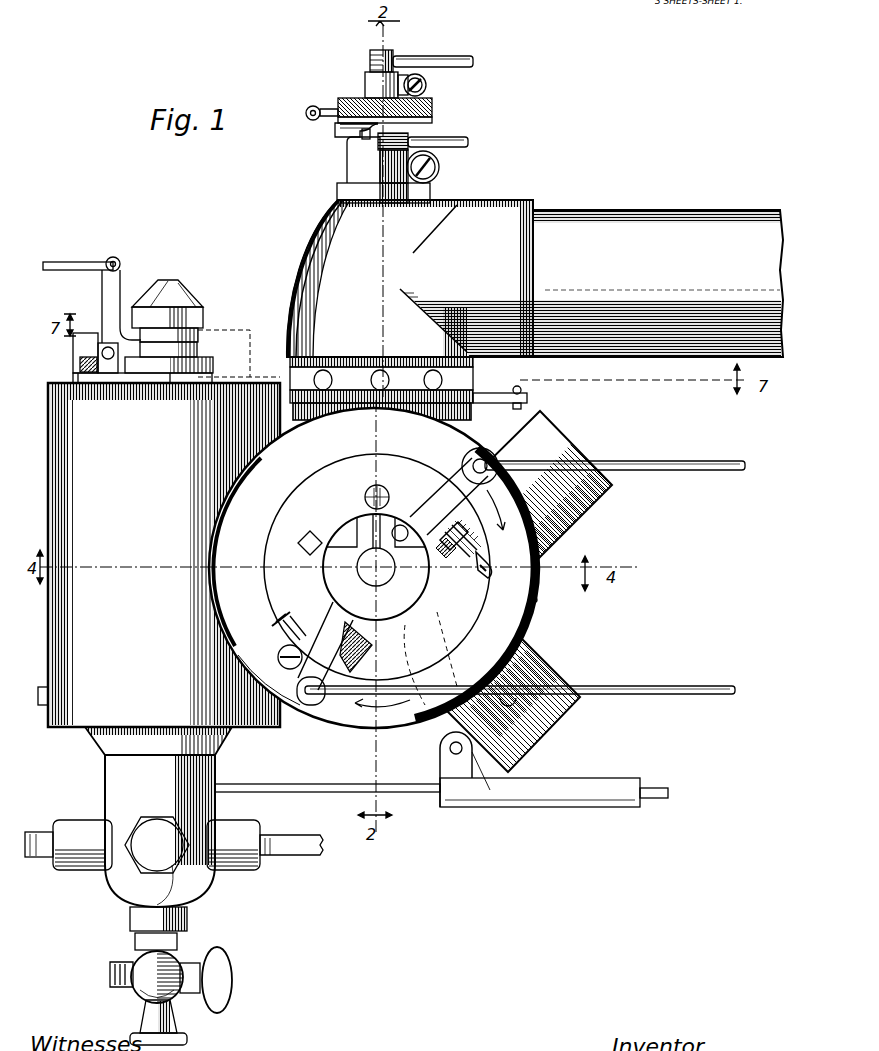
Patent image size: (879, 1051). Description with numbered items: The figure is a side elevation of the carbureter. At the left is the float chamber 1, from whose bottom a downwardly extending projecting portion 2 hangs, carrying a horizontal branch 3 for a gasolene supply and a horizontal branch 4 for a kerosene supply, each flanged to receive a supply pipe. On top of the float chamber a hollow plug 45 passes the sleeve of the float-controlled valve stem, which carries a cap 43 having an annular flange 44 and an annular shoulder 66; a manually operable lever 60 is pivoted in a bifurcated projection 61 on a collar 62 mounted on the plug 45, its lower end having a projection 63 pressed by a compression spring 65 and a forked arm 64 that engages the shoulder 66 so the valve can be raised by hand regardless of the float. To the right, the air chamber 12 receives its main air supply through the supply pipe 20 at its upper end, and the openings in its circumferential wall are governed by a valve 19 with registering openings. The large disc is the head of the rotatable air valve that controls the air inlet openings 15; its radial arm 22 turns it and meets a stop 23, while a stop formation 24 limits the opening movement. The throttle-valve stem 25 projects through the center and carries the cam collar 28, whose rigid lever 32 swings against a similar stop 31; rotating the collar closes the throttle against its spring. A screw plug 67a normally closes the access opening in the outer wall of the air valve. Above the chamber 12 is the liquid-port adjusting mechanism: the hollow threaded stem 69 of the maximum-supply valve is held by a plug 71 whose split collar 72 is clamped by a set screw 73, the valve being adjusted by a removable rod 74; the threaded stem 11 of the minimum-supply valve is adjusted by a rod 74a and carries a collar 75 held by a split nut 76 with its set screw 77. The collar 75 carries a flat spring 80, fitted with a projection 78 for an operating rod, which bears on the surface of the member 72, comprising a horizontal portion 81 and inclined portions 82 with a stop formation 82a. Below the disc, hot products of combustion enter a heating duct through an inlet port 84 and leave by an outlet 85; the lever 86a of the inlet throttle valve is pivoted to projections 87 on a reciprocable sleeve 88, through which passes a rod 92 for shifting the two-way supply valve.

The float chamber 1 is at (159, 555).
The downwardly extending projecting portion 2 is at (122, 777).
The horizontal branch 3 is at (80, 845).
The horizontal branch 4 is at (235, 832).
The valve stem 11 is at (370, 62).
The air chamber 12 is at (410, 278).
The air inlet openings 15 is at (345, 490).
The valve 19 is at (500, 388).
The air supply pipe 20 is at (625, 212).
The radial arm 22 is at (452, 652).
The stop 23 is at (322, 646).
The stop formation 24 is at (302, 556).
The throttle valve stem 25 is at (375, 582).
The cam collar 28 is at (390, 497).
The stop 31 is at (446, 590).
The lever 32 is at (456, 482).
The cap 43 is at (186, 296).
The annular flange 44 is at (194, 340).
The hollow plug 45 is at (214, 369).
The manually operable lever 60 is at (116, 258).
The bifurcated projection 61 is at (108, 383).
The collar 62 is at (172, 383).
The projection 63 is at (80, 383).
The forked arm 64 is at (205, 347).
The compression spring 65 is at (75, 360).
The annular shoulder 66 is at (200, 333).
The screw plug 67a is at (364, 497).
The hollow threaded stem 69 is at (398, 133).
The plug 71 is at (430, 191).
The split collar 72 is at (340, 186).
The set screw 73 is at (440, 167).
The adjusting rod 74 is at (442, 137).
The adjusting rod 74a is at (458, 56).
The collar 75 is at (395, 130).
The split nut 76 is at (369, 85).
The set screw 77 is at (427, 86).
The projection 78 is at (312, 107).
The flat spring 80 is at (337, 126).
The horizontal portion 81 is at (362, 128).
The inclined portions 82 is at (355, 140).
The stop formation 82a is at (372, 142).
The inlet port 84 is at (505, 695).
The outlet 85 is at (603, 487).
The lever 86a is at (447, 740).
The projections 87 is at (440, 765).
The sleeve 88 is at (516, 753).
The rod 92 is at (430, 795).